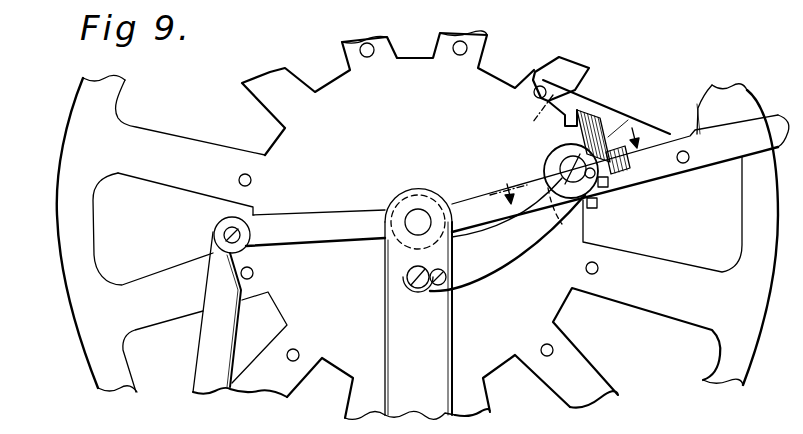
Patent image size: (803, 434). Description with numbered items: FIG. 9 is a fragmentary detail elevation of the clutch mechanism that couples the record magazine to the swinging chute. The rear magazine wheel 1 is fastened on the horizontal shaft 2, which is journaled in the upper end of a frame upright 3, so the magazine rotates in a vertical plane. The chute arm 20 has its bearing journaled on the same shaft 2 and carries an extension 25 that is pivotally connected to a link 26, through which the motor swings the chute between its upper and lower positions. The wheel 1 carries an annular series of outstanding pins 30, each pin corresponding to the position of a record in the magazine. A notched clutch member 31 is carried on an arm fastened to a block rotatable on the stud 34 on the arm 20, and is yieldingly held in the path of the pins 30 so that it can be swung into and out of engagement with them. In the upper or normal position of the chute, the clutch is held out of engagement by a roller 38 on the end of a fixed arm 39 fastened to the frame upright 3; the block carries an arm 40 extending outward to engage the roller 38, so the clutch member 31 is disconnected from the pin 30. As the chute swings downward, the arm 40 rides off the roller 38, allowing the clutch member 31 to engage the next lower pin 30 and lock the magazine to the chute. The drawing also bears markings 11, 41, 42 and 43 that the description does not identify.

The wheel 1 is at (266, 137).
The horizontal shaft 2 is at (416, 220).
The frame upright 3 is at (435, 343).
The direction arrow 11 is at (571, 166).
The arm 20 is at (641, 183).
The extension 25 is at (299, 222).
The link 26 is at (203, 352).
The pins 30 is at (453, 48).
The notched clutch member 31 is at (553, 152).
The stud 34 is at (592, 107).
The roller 38 is at (555, 163).
The fixed arm 39 is at (510, 257).
The arm 40 is at (608, 137).
The rod 41 is at (610, 108).
The hole 42 is at (683, 164).
The bracket 43 is at (548, 66).